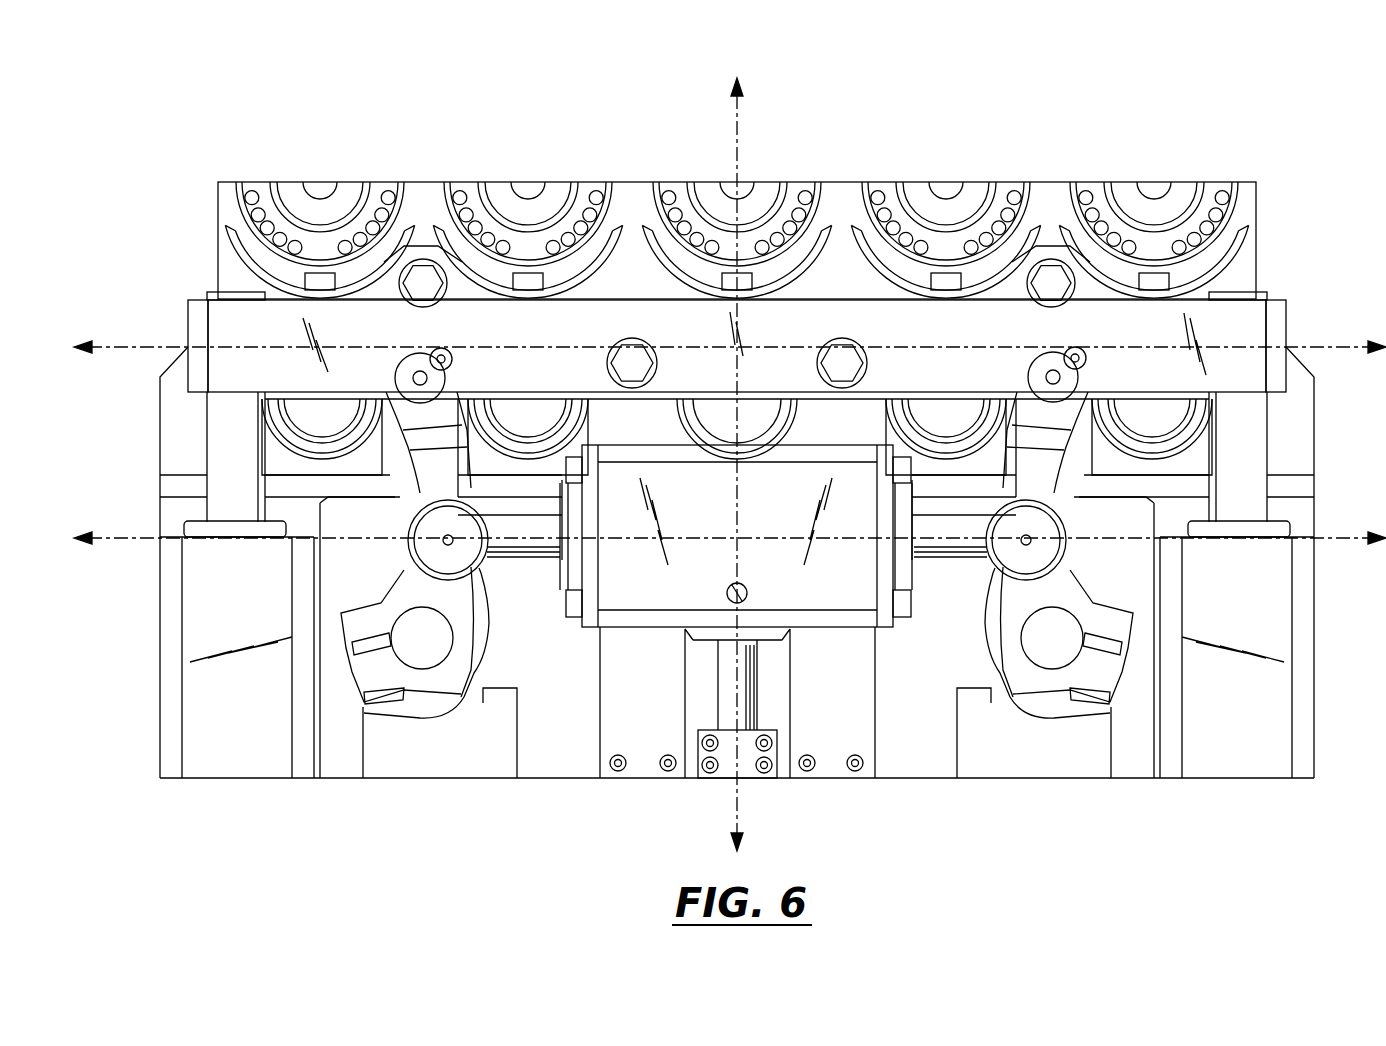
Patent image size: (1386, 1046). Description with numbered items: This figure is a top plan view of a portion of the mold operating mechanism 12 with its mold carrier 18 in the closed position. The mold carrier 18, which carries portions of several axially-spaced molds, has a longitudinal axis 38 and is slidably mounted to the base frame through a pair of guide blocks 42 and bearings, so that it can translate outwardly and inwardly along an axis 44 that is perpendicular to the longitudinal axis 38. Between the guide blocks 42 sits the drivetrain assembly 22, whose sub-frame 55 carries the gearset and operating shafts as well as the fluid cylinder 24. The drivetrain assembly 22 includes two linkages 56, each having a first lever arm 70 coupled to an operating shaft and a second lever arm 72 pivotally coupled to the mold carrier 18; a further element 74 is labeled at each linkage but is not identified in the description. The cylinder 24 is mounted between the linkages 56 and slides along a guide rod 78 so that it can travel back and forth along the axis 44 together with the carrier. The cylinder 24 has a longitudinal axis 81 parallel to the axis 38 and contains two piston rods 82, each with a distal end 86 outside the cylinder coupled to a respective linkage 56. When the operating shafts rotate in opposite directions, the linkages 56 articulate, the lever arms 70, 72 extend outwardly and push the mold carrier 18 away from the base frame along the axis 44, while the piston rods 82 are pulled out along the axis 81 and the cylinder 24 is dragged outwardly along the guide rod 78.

The mold operating mechanism 12 is at (413, 170).
The mold carrier 18 is at (1255, 318).
The drivetrain assembly 22 is at (482, 700).
The fluid cylinder 24 is at (716, 514).
The longitudinal axis 38 is at (1322, 347).
The guide blocks 42 is at (247, 720).
The axis 44 is at (738, 140).
The sub-frame 55 is at (561, 747).
The linkages 56 is at (1145, 805).
The first lever arm 70 is at (398, 587).
The second lever arm 72 is at (455, 488).
The pivot 74 is at (437, 527).
The guide rod 78 is at (752, 681).
The longitudinal axis 81 is at (1325, 538).
The piston rods 82 is at (543, 553).
The distal end 86 is at (489, 572).